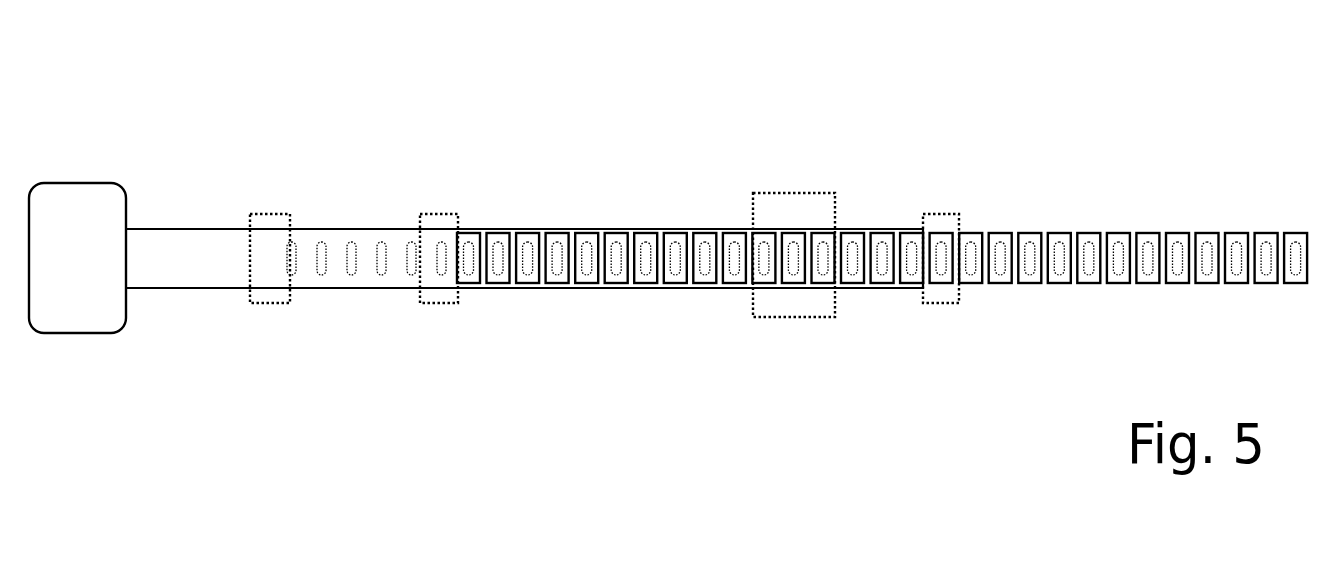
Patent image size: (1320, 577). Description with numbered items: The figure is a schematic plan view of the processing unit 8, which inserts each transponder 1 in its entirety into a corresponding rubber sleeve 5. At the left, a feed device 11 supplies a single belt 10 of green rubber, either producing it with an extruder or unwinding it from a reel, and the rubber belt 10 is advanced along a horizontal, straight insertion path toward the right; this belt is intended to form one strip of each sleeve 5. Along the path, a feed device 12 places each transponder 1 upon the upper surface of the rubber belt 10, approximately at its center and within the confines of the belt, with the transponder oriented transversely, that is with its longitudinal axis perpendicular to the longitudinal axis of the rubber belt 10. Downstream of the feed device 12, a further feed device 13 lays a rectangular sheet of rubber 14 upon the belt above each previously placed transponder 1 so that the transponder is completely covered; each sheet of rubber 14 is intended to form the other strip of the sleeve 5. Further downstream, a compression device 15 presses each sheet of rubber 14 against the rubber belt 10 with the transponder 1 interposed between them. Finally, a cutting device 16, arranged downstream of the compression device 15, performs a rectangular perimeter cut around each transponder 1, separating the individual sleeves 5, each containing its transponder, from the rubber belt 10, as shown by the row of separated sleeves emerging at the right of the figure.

The processing unit 8 is at (150, 76).
The feed device 11 is at (77, 258).
The rubber belt 10 is at (214, 265).
The transponder 1 is at (352, 250).
The sheet of rubber 14 is at (560, 245).
The rubber sleeve 5 is at (1096, 215).
The feed device 12 is at (263, 190).
The feed device 13 is at (444, 338).
The compression device 15 is at (787, 160).
The cutting device 16 is at (946, 338).